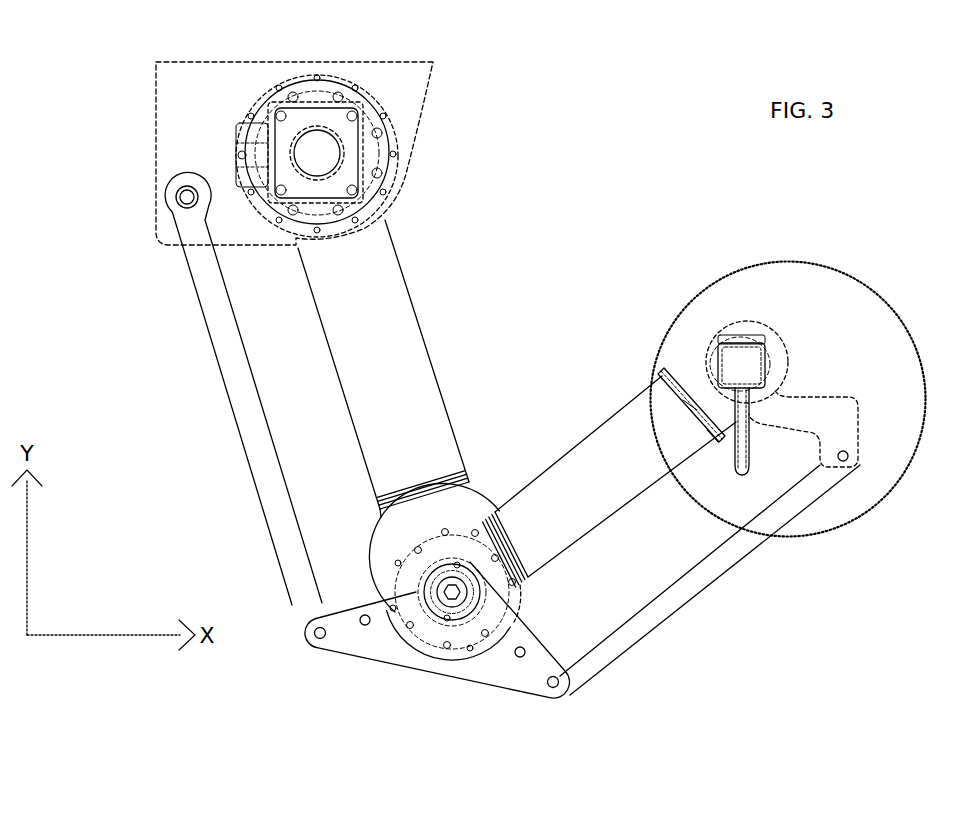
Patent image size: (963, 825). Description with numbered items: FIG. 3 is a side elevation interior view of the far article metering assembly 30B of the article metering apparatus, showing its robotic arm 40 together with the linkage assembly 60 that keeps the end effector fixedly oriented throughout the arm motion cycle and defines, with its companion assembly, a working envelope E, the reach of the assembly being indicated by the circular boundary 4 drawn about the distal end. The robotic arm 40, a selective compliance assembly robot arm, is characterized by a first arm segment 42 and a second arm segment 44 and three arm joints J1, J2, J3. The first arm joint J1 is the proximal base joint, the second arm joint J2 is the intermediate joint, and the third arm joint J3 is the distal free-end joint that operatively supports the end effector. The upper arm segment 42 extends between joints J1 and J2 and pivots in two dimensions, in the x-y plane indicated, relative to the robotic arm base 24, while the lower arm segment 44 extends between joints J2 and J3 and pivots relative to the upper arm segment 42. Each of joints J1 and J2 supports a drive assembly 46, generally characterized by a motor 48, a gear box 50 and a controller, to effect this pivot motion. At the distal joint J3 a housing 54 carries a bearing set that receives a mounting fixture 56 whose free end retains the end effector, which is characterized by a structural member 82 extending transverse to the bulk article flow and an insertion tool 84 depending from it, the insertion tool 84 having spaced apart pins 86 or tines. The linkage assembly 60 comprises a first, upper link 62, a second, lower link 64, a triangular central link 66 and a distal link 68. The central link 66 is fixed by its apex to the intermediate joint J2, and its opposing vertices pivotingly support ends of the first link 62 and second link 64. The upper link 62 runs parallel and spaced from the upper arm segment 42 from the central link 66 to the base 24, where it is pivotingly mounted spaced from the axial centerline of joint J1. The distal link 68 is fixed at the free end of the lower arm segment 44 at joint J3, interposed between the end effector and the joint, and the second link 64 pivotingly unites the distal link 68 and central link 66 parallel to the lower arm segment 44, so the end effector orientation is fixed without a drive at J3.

The work envelope / reach circle 4 is at (853, 273).
The robotic arm base 24 is at (169, 96).
The article metering assembly 30B is at (529, 146).
The robotic arm 40 is at (471, 288).
The first arm segment 42 is at (358, 340).
The second arm segment 44 is at (614, 461).
The drive assembly 46 is at (394, 79).
The motor 48 is at (305, 164).
The gear box 50 is at (388, 128).
The housing 54 is at (678, 377).
The mounting fixture 56 is at (773, 363).
The linkage assembly 60 is at (176, 296).
The first link 62 is at (229, 377).
The second link 64 is at (747, 548).
The central link 66 is at (433, 668).
The distal link 68 is at (843, 413).
The structural member 82 is at (729, 376).
The insertion tool 84 is at (728, 338).
The pins 86 is at (740, 467).
The first arm joint J1 is at (296, 74).
The second arm joint J2 is at (482, 496).
The third arm joint J3 is at (708, 320).
The working envelope E is at (680, 502).